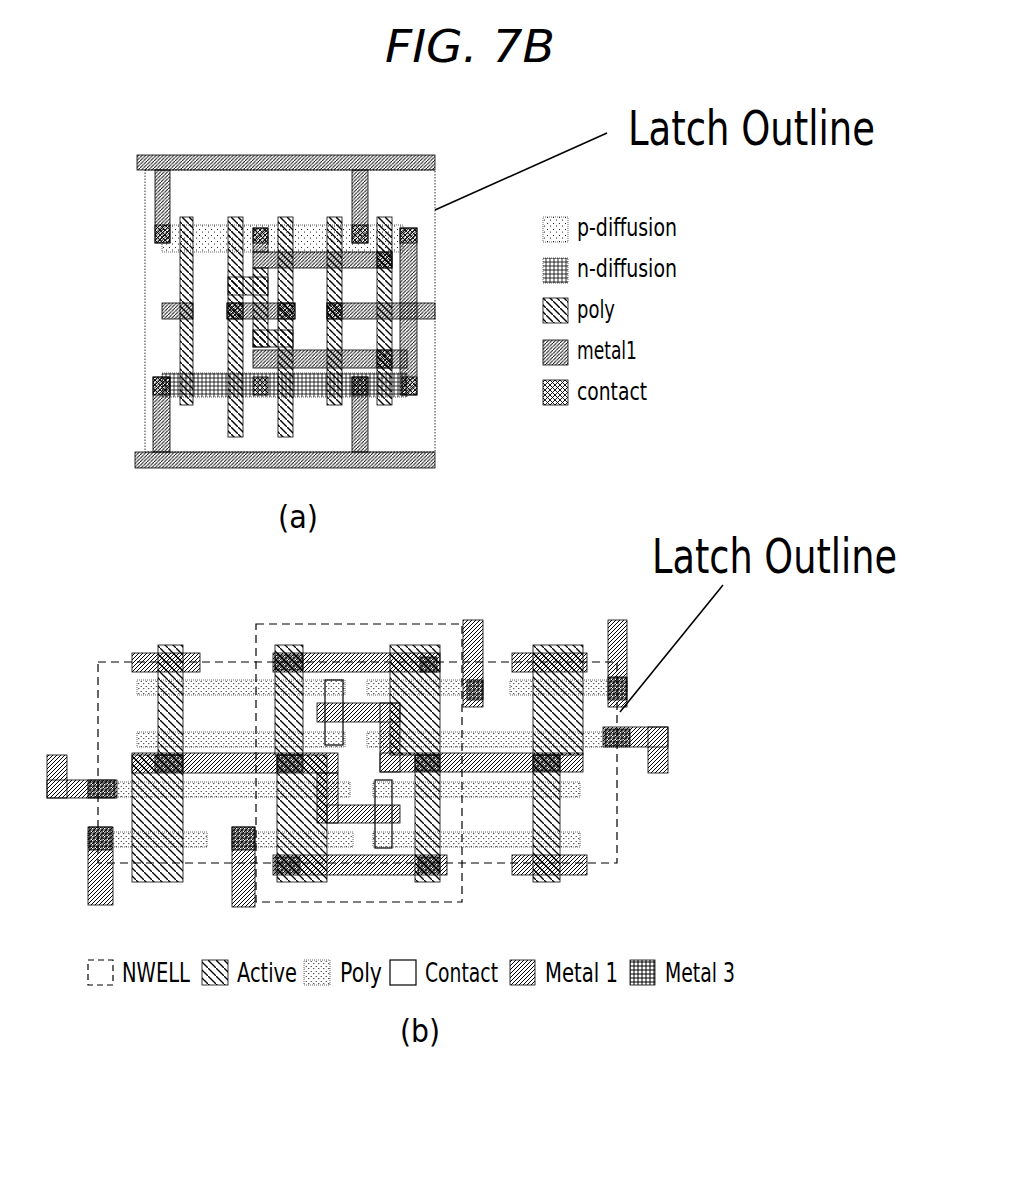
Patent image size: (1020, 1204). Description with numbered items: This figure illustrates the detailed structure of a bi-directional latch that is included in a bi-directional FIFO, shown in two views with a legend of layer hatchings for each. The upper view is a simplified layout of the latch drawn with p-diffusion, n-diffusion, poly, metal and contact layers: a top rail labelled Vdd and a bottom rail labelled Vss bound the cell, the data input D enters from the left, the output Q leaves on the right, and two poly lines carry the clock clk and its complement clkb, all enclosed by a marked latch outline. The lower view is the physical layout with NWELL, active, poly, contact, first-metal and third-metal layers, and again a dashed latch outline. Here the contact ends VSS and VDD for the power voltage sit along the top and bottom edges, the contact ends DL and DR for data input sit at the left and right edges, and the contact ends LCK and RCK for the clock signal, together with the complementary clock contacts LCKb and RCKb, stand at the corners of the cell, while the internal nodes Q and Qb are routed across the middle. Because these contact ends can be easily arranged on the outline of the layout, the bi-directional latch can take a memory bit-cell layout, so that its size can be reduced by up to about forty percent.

The Vdd power rail (metal1) Vdd is at (309, 164).
The Vss ground rail (metal1) Vss is at (307, 461).
The data input D (metal1) D is at (165, 313).
The output Q (metal1) Q is at (455, 538).
The clock poly line clk is at (218, 334).
The inverted clock poly line clk-bar clkb is at (325, 423).
The contact end for power voltage VDD is at (360, 764).
The contact end for power voltage VSS is at (359, 764).
The inverted output Qb (metal1) Qb is at (235, 765).
The contact end for data input DL is at (82, 778).
The contact end for data input DR is at (635, 750).
The contact end for clock signal LCK is at (101, 866).
The left inverted clock LCKb (metal1) LCKb is at (245, 867).
The contact end for clock signal RCK is at (618, 663).
The right inverted clock RCKb (metal1) RCKb is at (474, 663).